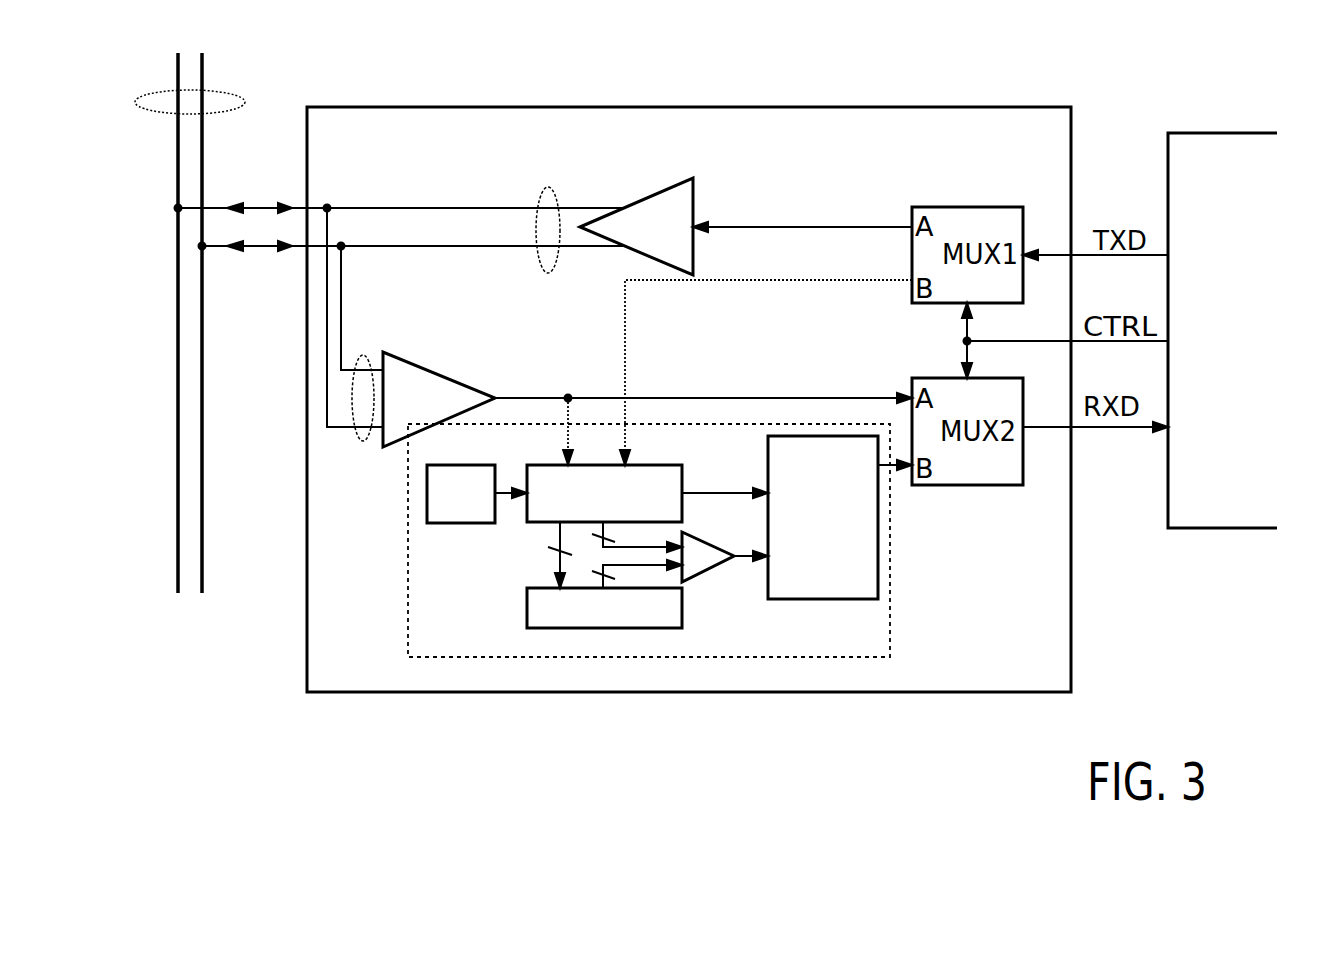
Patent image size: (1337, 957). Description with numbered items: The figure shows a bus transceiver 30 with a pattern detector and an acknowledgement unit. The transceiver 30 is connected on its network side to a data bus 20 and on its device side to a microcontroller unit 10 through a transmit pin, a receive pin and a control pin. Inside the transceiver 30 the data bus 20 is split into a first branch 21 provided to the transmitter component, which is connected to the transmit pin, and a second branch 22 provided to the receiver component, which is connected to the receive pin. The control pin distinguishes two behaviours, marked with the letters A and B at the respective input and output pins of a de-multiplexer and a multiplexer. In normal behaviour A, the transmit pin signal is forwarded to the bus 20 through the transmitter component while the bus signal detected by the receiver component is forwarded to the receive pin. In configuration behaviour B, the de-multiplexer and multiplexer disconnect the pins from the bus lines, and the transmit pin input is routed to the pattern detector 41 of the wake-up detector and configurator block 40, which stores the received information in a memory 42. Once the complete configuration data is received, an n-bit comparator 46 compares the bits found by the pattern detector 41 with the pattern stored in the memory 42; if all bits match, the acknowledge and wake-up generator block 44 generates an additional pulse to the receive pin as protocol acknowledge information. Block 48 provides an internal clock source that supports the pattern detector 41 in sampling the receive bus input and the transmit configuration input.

The microcontroller unit 10 is at (1185, 146).
The data bus 20 is at (298, 85).
The first branch 21 is at (362, 441).
The second branch 22 is at (546, 187).
The transceiver 30 is at (370, 128).
The wake-up detector and configurator block 40 is at (660, 527).
The pattern detector 41 is at (575, 500).
The memory 42 is at (604, 608).
The acknowledge and wake-up generator block 44 is at (823, 517).
The n-bit comparator 46 is at (696, 563).
The internal clock source block 48 is at (461, 494).